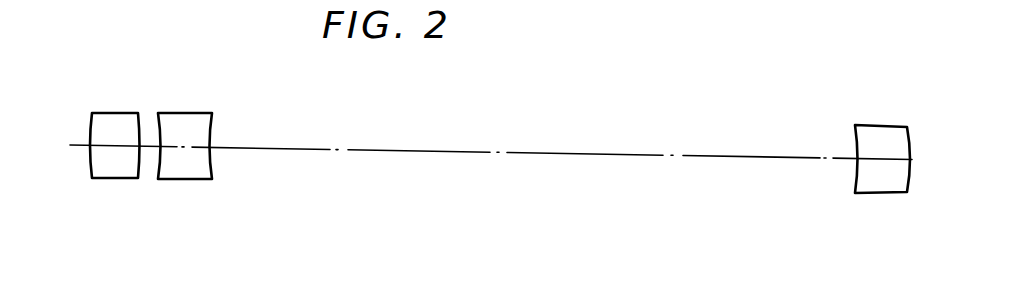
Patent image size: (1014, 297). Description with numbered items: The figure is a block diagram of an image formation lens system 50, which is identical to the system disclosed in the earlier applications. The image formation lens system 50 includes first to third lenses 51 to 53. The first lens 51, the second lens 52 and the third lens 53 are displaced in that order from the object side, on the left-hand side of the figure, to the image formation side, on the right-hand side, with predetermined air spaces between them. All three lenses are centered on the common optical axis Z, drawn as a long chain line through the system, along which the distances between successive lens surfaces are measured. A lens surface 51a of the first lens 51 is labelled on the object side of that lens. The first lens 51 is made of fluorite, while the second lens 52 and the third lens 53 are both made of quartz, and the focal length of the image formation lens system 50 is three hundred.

The image formation lens system 50 is at (698, 114).
The first lens 51 is at (111, 172).
The lens surface 51a is at (90, 120).
The second lens 52 is at (193, 173).
The third lens 53 is at (862, 187).
The optical axis Z is at (463, 148).